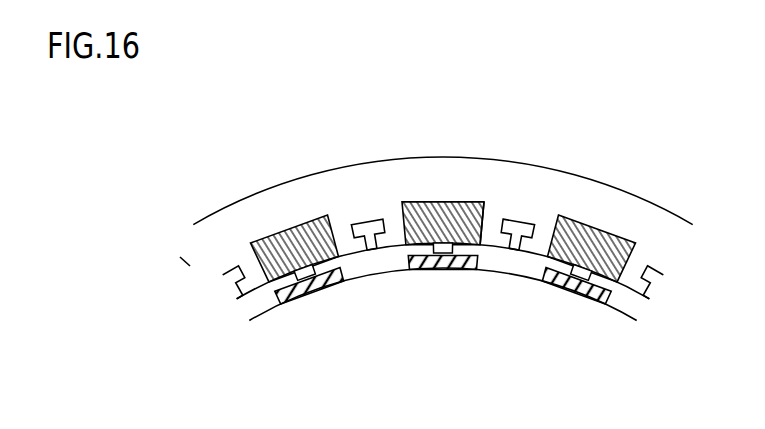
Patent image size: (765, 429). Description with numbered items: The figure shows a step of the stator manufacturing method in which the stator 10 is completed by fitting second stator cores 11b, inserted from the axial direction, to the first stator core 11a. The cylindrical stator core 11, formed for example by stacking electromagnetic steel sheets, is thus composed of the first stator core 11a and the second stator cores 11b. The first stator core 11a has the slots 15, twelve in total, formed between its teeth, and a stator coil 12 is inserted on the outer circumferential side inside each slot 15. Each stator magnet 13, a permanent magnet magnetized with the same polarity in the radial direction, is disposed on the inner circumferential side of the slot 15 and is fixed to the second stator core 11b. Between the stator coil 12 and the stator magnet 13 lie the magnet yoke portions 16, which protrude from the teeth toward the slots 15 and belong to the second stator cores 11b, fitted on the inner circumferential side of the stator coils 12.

The stator 10 is at (174, 157).
The stator core 11 is at (278, 189).
The first stator core 11a is at (360, 170).
The second stator core 11b is at (380, 262).
The stator coil 12 is at (428, 200).
The stator magnet 13 is at (472, 268).
The slot 15 is at (452, 200).
The magnet yoke portion 16 is at (426, 262).